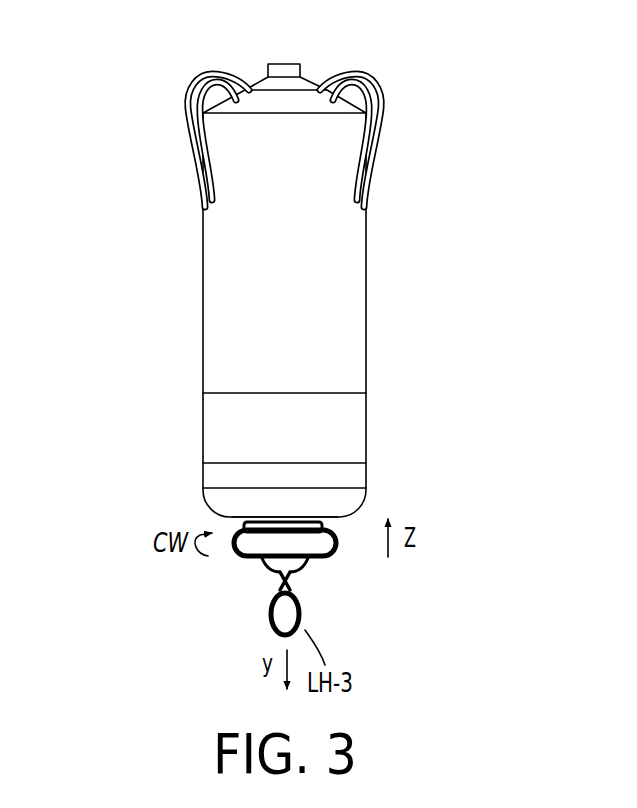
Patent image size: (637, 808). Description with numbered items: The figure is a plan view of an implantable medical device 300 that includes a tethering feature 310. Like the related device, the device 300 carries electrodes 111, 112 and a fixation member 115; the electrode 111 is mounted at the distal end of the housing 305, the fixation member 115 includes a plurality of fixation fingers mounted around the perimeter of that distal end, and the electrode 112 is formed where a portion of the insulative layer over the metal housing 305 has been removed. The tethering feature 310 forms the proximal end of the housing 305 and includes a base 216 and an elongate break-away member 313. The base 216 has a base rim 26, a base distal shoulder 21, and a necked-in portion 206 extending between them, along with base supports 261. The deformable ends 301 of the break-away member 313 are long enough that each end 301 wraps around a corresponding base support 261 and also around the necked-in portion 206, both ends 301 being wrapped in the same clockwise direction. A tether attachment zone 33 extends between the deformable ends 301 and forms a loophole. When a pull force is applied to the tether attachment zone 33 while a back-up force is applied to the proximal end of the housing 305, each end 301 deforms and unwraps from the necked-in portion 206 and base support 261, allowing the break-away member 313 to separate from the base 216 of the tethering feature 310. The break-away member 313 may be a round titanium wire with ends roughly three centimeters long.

The implantable medical device 300 is at (100, 157).
The electrode 111 is at (281, 63).
The fixation member 115 is at (400, 111).
The housing 305 is at (288, 295).
The electrode 112 is at (348, 430).
The base distal shoulder 21 is at (352, 503).
The deformable ends 301 is at (246, 528).
The necked-in portion 206 is at (330, 521).
The base support 261 is at (250, 557).
The base 216 is at (256, 573).
The base rim 26 is at (282, 542).
The elongate break-away member 313 is at (236, 612).
The tether attachment zone 33 is at (287, 623).
The tethering feature 310 is at (427, 490).